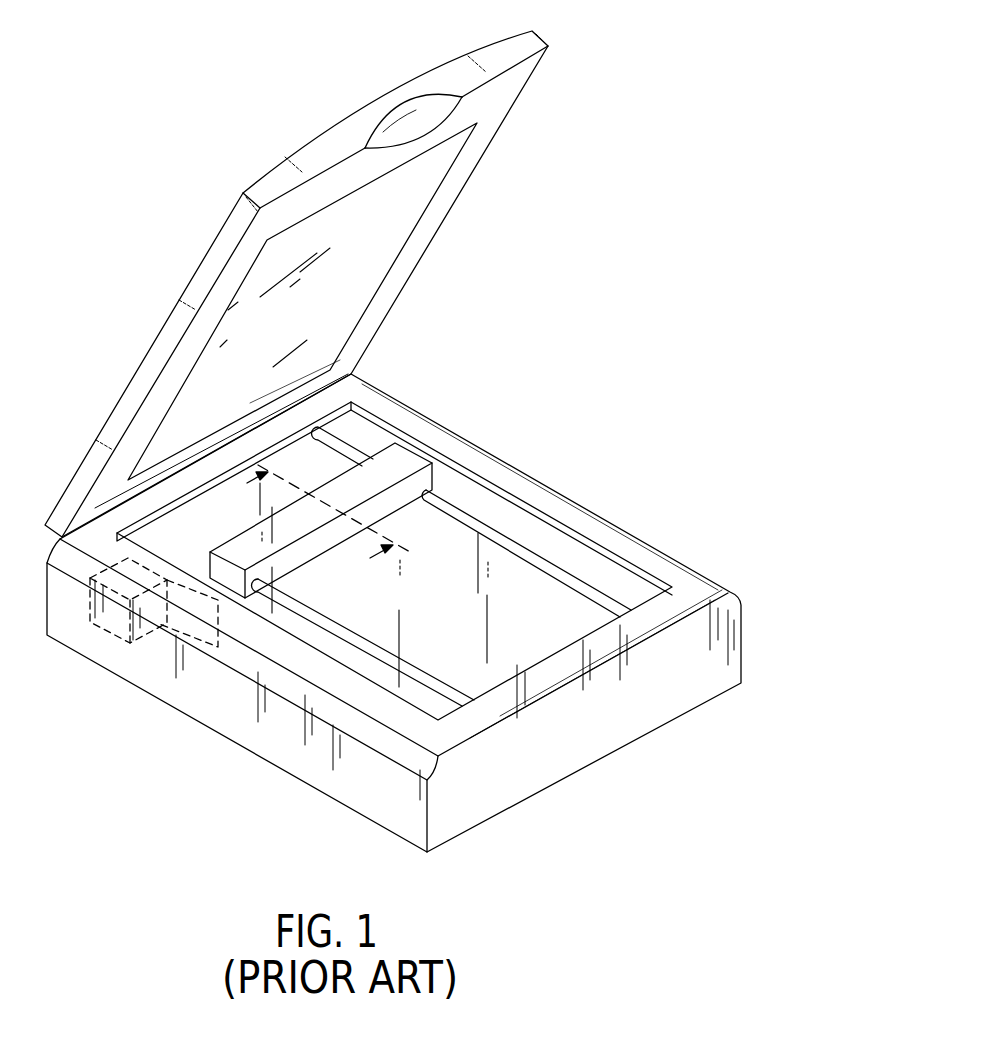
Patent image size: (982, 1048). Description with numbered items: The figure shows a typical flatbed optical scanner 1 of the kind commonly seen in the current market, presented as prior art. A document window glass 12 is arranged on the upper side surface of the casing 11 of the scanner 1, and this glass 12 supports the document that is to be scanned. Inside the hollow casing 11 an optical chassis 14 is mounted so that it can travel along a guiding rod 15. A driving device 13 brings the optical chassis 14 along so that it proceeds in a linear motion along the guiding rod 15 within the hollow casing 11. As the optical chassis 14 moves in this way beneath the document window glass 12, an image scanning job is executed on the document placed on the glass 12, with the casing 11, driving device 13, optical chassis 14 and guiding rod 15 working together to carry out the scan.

The flatbed optical scanner 1 is at (600, 381).
The casing 11 is at (642, 562).
The document window glass 12 is at (498, 512).
The driving device 13 is at (105, 623).
The optical chassis 14 is at (398, 458).
The guiding rod 15 is at (507, 533).